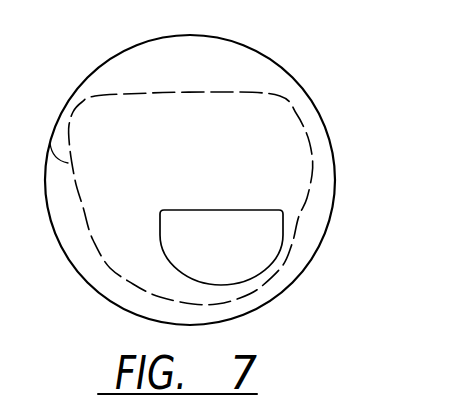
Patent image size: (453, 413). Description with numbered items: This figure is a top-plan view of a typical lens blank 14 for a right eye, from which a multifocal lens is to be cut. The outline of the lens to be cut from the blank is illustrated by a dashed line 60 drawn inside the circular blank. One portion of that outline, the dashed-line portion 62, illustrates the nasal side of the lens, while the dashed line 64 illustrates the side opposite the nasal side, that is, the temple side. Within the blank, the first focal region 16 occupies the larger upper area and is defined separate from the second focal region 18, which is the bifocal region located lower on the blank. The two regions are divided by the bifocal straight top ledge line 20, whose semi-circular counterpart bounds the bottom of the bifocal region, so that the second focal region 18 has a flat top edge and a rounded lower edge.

The lens blank 14 is at (240, 44).
The first focal region 16 is at (203, 162).
The second focal region 18 is at (230, 243).
The bifocal straight top ledge line 20 is at (232, 210).
The dashed line 60 is at (286, 103).
The dashed-line portion 62 is at (301, 212).
The dashed line 64 is at (50, 143).